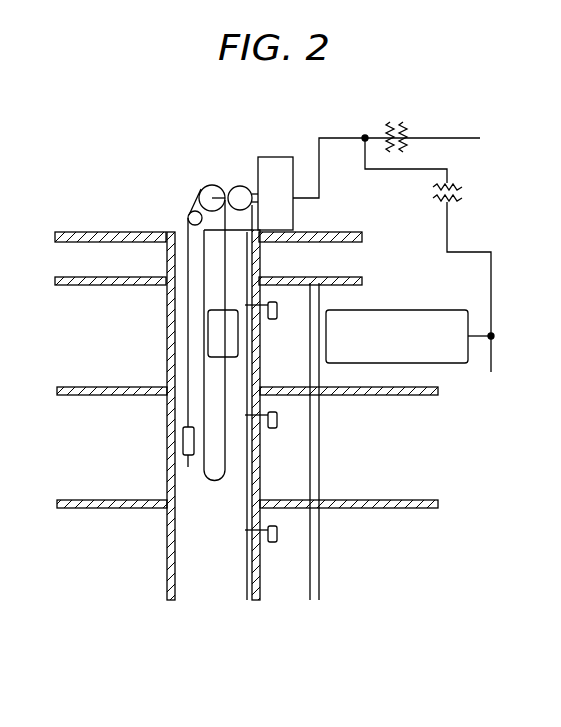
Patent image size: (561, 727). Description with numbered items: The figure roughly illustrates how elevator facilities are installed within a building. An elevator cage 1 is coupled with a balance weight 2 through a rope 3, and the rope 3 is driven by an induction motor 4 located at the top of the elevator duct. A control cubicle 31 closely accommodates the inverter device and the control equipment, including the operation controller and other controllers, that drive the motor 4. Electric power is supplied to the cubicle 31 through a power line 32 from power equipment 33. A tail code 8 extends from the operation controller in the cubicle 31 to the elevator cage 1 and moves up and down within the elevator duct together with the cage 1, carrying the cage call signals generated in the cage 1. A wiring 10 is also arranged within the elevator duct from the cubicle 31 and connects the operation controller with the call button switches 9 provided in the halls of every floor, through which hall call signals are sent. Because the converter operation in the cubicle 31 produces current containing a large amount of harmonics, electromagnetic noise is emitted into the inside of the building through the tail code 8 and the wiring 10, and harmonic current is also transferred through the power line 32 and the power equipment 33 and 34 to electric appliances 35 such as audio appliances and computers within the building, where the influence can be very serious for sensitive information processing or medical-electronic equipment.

The elevator cage 1 is at (223, 308).
The balance weight 2 is at (188, 458).
The rope 3 is at (187, 326).
The induction motor 4 is at (240, 186).
The tail code 8 is at (212, 482).
The call button switch 9 is at (276, 322).
The wiring 10 is at (247, 548).
The control cubicle 31 is at (277, 157).
The power line 32 is at (333, 138).
The power equipment 33 is at (404, 122).
The power equipment 34 is at (462, 198).
The electric appliances 35 is at (444, 310).